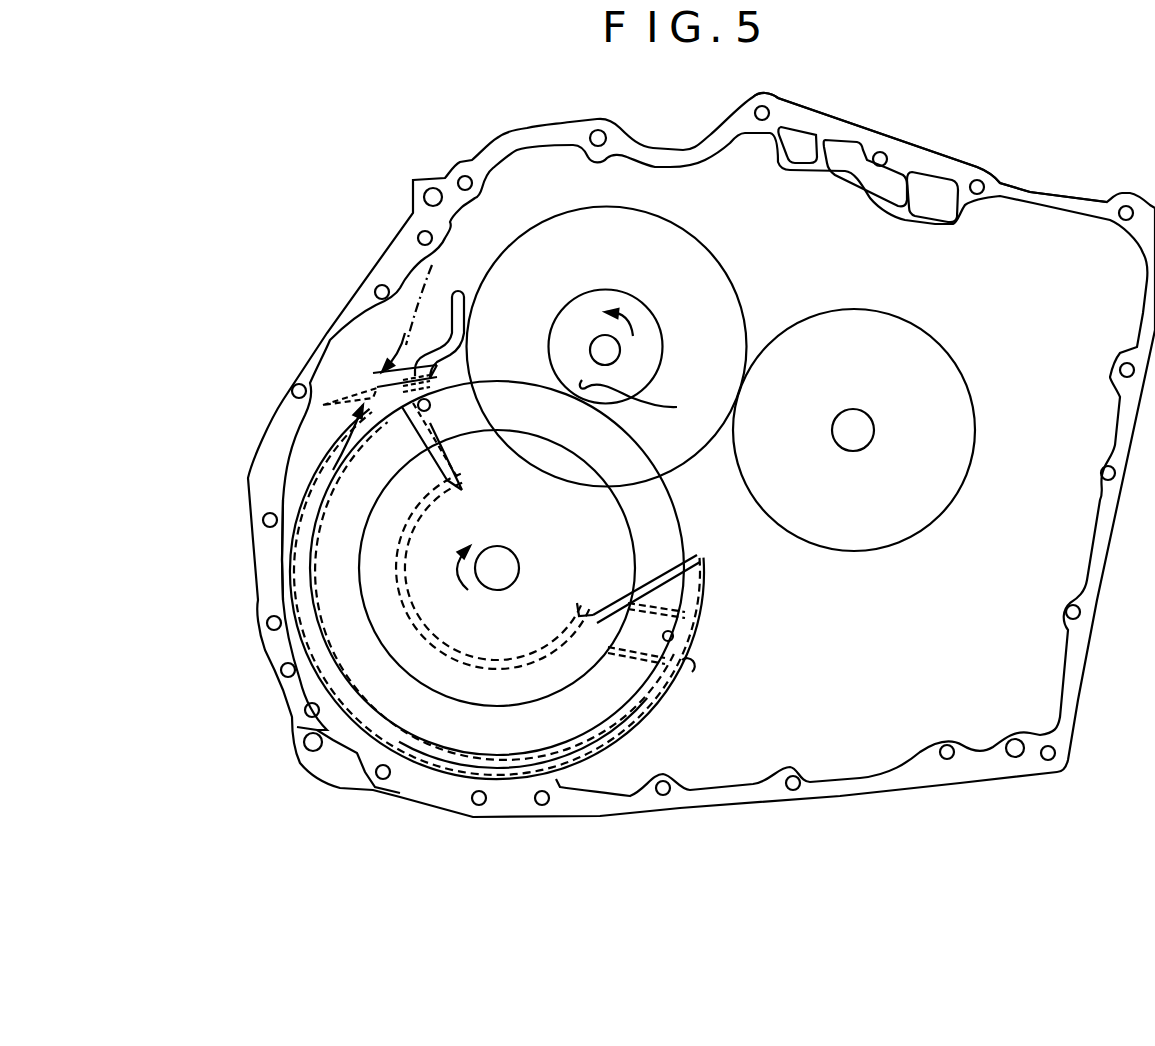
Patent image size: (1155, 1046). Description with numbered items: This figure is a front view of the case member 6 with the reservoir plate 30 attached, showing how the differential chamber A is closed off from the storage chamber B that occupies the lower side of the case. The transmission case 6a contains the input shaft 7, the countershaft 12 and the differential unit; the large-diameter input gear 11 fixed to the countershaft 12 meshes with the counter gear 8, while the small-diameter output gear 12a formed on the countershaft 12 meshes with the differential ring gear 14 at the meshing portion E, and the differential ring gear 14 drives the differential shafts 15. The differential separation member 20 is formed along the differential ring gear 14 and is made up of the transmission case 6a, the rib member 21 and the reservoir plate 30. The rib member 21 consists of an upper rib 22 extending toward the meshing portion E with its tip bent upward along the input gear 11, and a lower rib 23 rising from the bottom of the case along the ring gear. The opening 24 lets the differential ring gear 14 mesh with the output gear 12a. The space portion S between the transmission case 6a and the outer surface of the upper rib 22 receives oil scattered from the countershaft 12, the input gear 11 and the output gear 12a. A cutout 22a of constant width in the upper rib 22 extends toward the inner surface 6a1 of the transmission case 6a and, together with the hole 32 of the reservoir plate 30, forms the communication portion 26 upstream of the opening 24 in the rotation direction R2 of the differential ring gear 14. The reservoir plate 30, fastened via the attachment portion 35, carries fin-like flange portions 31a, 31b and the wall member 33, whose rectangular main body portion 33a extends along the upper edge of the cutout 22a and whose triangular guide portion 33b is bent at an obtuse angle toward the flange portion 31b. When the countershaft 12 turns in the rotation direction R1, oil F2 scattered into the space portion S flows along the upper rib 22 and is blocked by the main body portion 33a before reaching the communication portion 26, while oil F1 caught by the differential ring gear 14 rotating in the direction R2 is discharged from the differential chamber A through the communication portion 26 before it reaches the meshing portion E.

The case member 6 is at (400, 168).
The transmission case 6a is at (1068, 197).
The inner surface of the transmission case 6a1 is at (283, 553).
The input shaft 7 is at (849, 410).
The counter gear 8 is at (899, 312).
The input gear 11 is at (704, 257).
The countershaft 12 is at (591, 338).
The output gear 12a is at (612, 290).
The differential ring gear 14 is at (686, 514).
The differential shafts 15 is at (522, 562).
The differential separation member 20 is at (727, 593).
The rib member 21 is at (460, 282).
The upper rib 22 is at (447, 343).
The cutout 22a is at (376, 377).
The lower rib 23 is at (689, 668).
The opening 24 is at (516, 366).
The communication portion 26 is at (315, 400).
The reservoir plate 30 is at (470, 747).
The flange portion 31a is at (657, 723).
The upper flange portion 31b is at (300, 470).
The hole 32 is at (337, 430).
The wall member 33 is at (345, 224).
The main body portion 33a is at (368, 372).
The guide portion 33b is at (367, 373).
The attachment portion 35 is at (673, 636).
The differential chamber A is at (357, 672).
The storage chamber B is at (962, 705).
The meshing portion E is at (636, 400).
The space portion S is at (448, 236).
The oil F1 is at (344, 466).
The oil F2 is at (388, 346).
The rotation direction R1 is at (630, 341).
The rotation direction R2 is at (467, 588).